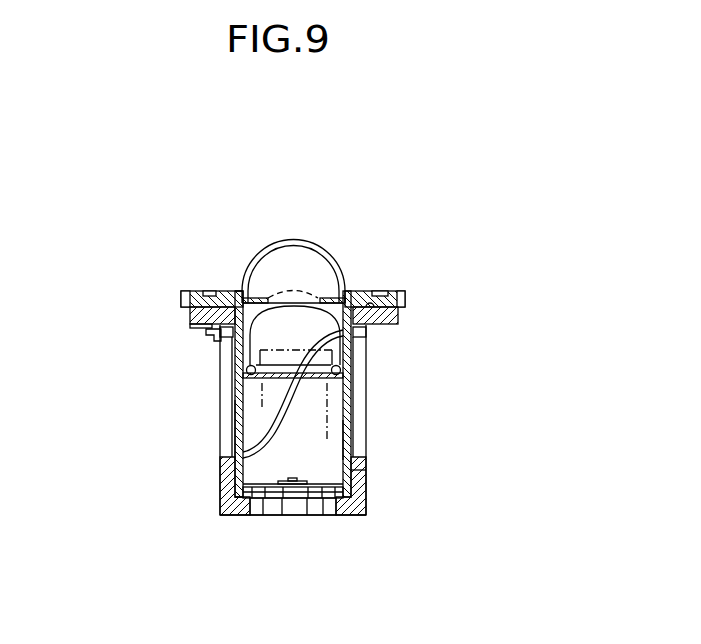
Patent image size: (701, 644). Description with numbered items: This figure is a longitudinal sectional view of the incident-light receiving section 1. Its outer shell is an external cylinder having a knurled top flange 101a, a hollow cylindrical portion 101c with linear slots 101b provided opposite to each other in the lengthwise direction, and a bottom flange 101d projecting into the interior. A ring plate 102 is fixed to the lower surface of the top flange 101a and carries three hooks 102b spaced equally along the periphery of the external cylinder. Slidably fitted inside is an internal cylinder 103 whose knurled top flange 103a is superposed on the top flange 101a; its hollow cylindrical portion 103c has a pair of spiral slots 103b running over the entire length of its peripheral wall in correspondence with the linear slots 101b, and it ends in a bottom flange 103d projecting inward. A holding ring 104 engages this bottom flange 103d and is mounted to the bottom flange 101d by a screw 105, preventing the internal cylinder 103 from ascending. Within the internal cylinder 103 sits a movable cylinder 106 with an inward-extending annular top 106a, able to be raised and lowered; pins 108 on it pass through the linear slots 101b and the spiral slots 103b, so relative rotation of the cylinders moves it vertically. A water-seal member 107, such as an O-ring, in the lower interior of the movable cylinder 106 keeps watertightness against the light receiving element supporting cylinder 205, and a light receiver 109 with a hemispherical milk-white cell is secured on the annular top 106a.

The incident-light receiving section 1 is at (195, 163).
The top flange 101a is at (406, 315).
The linear slots 101b is at (220, 387).
The hollow cylindrical portion 101c is at (360, 482).
The bottom flange 101d is at (347, 517).
The ring plate 102 is at (190, 325).
The hooks 102b is at (207, 336).
The internal cylinder 103 is at (348, 292).
The top flange 103a is at (242, 296).
The spiral slots 103b is at (235, 426).
The hollow cylindrical portion 103c is at (352, 433).
The bottom flange 103d is at (245, 516).
The holding ring 104 is at (311, 500).
The screw 105 is at (292, 478).
The movable cylinder 106 is at (352, 360).
The annular top 106a is at (303, 299).
The water-seal member 107 is at (246, 368).
The pins 108 is at (243, 288).
The light receiver 109 is at (296, 246).
The light receiving element supporting cylinder 205 is at (257, 432).